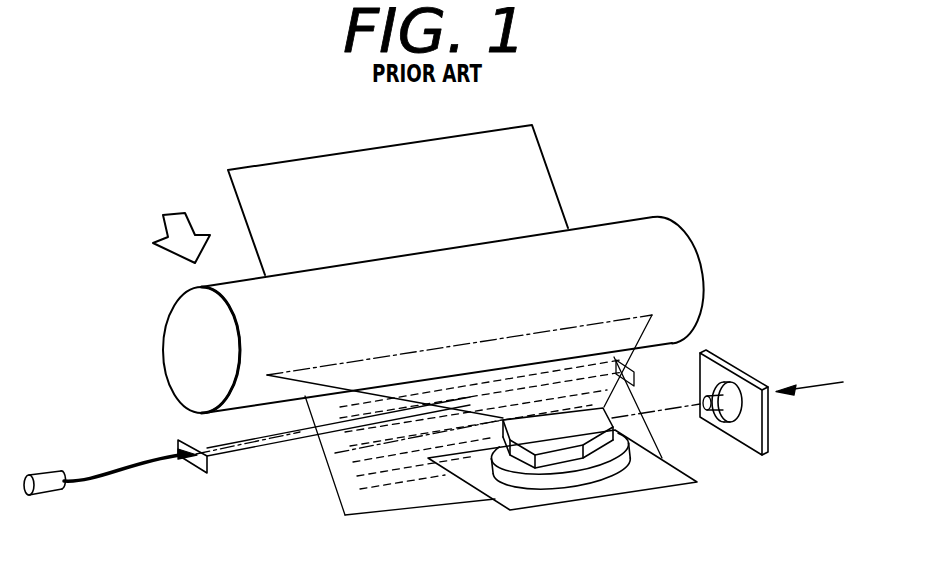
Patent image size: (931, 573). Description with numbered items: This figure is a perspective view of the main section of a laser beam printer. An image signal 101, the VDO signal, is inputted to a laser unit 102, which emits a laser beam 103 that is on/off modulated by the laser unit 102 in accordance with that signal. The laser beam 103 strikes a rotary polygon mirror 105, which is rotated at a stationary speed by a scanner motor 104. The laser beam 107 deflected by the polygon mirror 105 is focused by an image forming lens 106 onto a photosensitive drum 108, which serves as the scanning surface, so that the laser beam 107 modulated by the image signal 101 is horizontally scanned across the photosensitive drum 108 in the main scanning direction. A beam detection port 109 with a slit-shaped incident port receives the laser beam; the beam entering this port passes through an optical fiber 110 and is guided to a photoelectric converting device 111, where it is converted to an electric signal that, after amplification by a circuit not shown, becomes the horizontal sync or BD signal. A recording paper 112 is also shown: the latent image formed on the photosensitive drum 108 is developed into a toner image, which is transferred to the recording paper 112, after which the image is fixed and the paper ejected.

The image signal 101 is at (825, 383).
The laser unit 102 is at (742, 365).
The laser beam 103 is at (680, 417).
The scanner motor 104 is at (663, 488).
The rotary polygon mirror 105 is at (561, 458).
The image forming lens 106 is at (490, 432).
The laser beam 107 is at (447, 412).
The photosensitive drum 108 is at (628, 219).
The beam detection port 109 is at (178, 442).
The optical fiber 110 is at (110, 471).
The photoelectric converting device 111 is at (47, 470).
The recording paper 112 is at (462, 132).